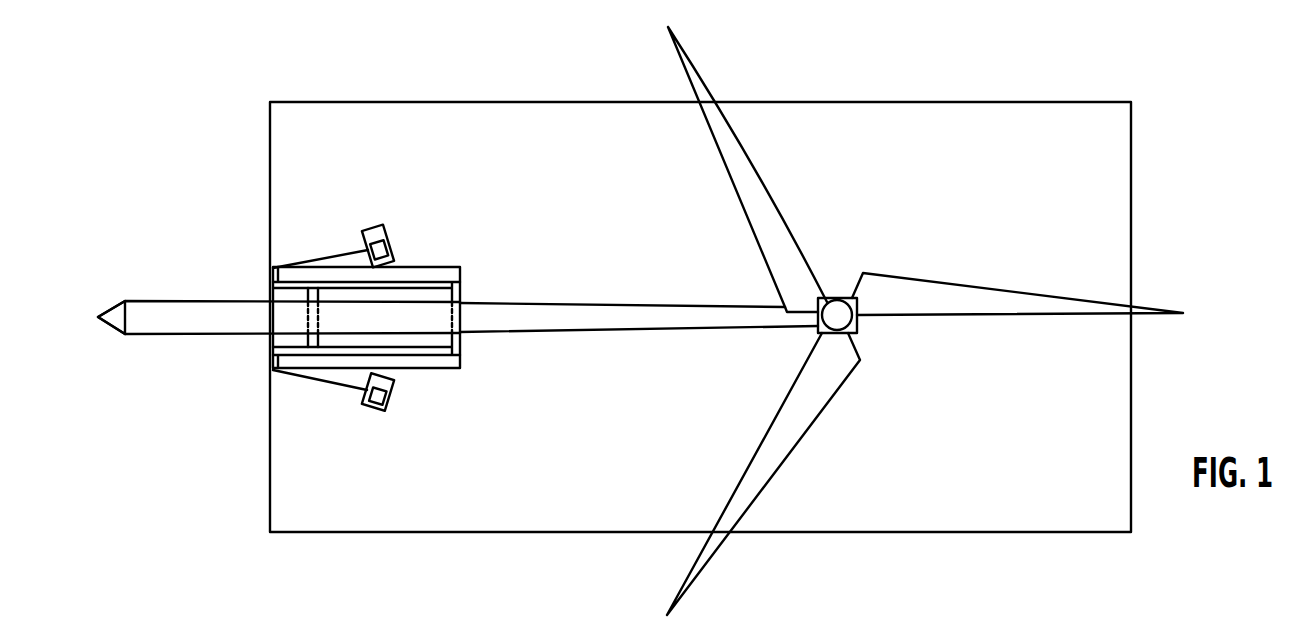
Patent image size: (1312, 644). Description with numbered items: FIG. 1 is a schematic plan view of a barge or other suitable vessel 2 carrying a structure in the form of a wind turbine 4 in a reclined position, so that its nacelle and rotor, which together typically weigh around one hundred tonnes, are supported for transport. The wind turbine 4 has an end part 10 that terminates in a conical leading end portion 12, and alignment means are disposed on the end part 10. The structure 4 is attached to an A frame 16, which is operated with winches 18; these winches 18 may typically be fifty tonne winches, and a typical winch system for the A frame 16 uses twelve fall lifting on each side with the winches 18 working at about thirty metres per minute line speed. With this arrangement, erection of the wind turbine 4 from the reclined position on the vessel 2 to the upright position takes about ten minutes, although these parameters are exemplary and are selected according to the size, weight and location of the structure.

The barge 2 is at (1087, 507).
The wind turbine 4 is at (625, 315).
The end part 10 is at (197, 323).
The conical leading end portion 12 is at (118, 316).
The A frame 16 is at (441, 268).
The winches 18 is at (368, 228).